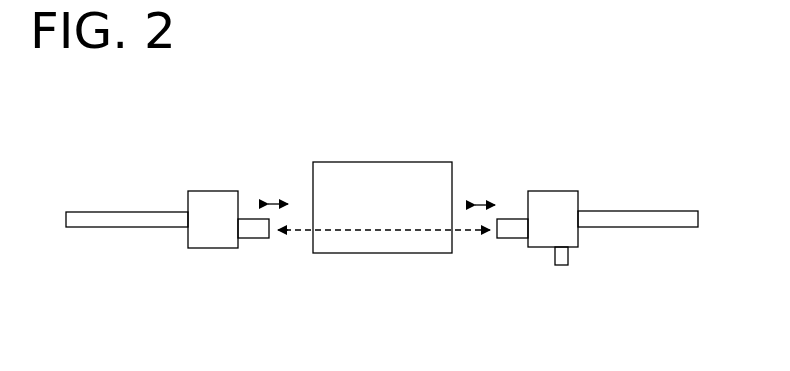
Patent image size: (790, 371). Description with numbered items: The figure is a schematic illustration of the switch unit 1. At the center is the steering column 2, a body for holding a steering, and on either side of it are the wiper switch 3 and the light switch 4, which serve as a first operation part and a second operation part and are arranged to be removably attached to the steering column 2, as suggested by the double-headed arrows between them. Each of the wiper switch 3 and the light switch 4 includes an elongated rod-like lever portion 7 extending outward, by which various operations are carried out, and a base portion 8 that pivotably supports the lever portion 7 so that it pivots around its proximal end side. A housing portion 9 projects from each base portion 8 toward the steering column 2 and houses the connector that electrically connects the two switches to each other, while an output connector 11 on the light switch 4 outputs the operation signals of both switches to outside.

The switch unit 1 is at (522, 98).
The steering column 2 is at (385, 158).
The wiper switch 3 is at (216, 188).
The light switch 4 is at (556, 188).
The lever portion 7 is at (87, 214).
The base portion 8 is at (209, 244).
The housing portion 9 is at (255, 233).
The output connector 11 is at (560, 268).